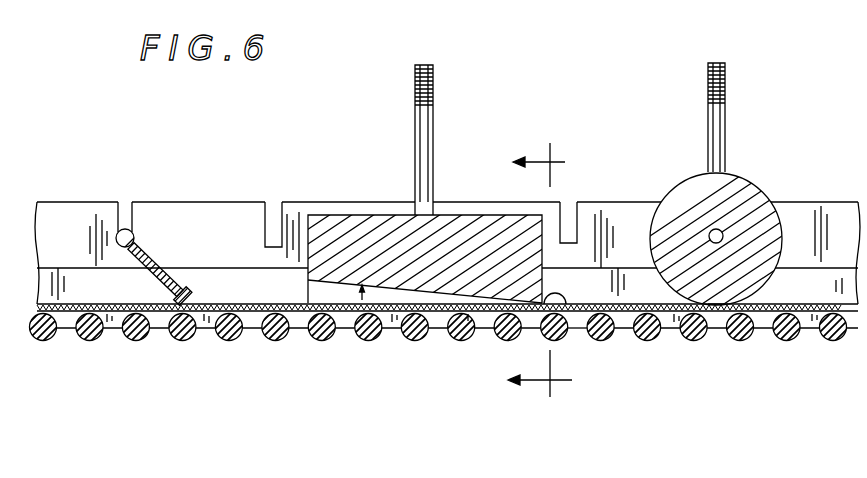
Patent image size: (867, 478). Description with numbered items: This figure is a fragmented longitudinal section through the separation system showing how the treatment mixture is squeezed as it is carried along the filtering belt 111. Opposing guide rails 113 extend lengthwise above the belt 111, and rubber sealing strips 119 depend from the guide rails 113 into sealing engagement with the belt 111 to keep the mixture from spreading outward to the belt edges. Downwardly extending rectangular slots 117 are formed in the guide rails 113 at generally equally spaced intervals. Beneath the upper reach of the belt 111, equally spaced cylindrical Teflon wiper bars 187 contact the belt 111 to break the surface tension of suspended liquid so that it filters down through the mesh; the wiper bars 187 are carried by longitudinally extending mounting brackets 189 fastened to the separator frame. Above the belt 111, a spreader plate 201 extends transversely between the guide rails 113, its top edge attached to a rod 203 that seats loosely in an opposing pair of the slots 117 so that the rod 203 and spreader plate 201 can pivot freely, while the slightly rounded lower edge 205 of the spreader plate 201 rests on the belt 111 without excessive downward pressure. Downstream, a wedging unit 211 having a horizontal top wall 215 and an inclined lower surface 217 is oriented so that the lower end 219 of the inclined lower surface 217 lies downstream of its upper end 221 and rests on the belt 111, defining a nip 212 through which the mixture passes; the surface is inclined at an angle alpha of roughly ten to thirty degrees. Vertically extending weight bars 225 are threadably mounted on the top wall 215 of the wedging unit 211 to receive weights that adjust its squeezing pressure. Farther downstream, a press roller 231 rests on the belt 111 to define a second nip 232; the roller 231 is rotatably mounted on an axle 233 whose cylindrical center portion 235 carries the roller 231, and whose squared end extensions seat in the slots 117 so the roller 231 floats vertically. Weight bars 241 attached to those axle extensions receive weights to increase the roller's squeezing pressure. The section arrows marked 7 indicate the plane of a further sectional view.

The guide rails 113 is at (52, 200).
The rubber sealing strips 119 is at (70, 268).
The rectangular slots 117 is at (124, 230).
The rod 203 is at (130, 231).
The wedging unit 211 is at (343, 213).
The horizontal top wall 215 is at (475, 215).
The upper end of inclined lower surface 221 is at (306, 282).
The inclined lower surface 217 is at (436, 298).
The weight bars 225 is at (433, 100).
The weight bars 241 is at (725, 100).
The press roller 231 is at (755, 185).
The axle 233 is at (707, 228).
The cylindrical center portion 235 is at (724, 239).
The nip 232 is at (720, 306).
The section line 7- 7 is at (540, 277).
The filtering belt 111 is at (250, 313).
The spreader plate 201 is at (158, 313).
The lower edge of spreader plate 205 is at (200, 313).
The wiper bars 187 is at (689, 338).
The mounting brackets 189 is at (762, 330).
The nip 212 is at (577, 332).
The lower end of inclined lower surface 219 is at (527, 326).